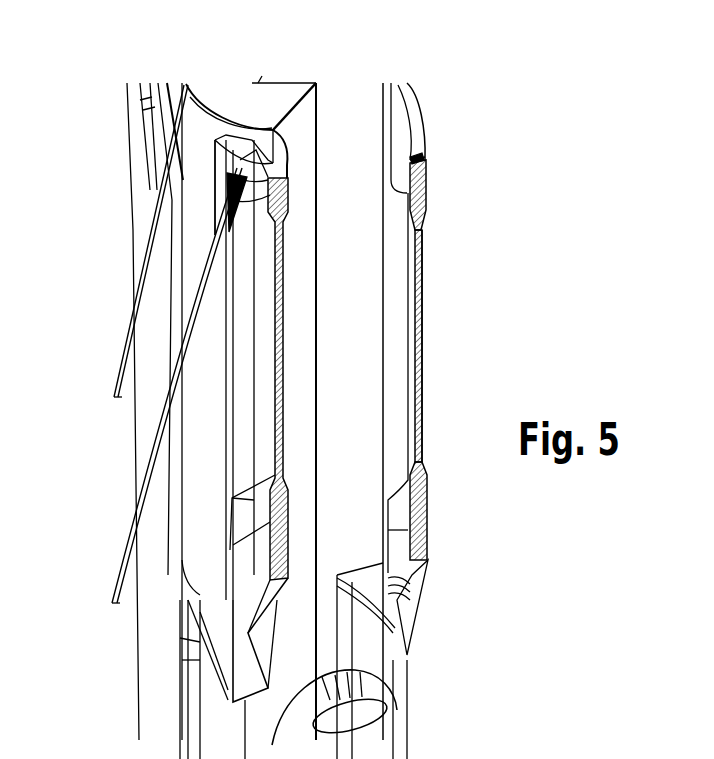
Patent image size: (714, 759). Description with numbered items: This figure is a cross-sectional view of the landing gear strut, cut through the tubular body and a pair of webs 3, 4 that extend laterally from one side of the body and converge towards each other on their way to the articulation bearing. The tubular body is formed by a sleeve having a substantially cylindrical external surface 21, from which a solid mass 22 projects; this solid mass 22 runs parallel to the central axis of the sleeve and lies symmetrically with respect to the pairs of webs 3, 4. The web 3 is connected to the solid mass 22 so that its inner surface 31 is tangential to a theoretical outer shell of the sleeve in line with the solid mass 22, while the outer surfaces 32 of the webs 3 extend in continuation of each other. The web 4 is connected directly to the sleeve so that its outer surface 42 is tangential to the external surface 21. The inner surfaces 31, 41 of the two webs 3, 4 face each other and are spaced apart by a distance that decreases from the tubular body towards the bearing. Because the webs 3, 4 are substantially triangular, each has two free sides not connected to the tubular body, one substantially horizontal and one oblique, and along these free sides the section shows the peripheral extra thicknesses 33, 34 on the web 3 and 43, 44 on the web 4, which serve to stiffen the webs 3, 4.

The web 3 is at (273, 393).
The web 4 is at (422, 287).
The external surface 21 is at (360, 123).
The solid mass 22 is at (263, 108).
The inner surface 31 is at (298, 410).
The outer surface 32 is at (268, 348).
The peripheral extra thickness 33 is at (270, 192).
The peripheral extra thickness 34 is at (273, 527).
The inner surface 41 is at (398, 329).
The outer surface 42 is at (443, 258).
The peripheral extra thickness 43 is at (425, 185).
The peripheral extra thickness 44 is at (423, 523).